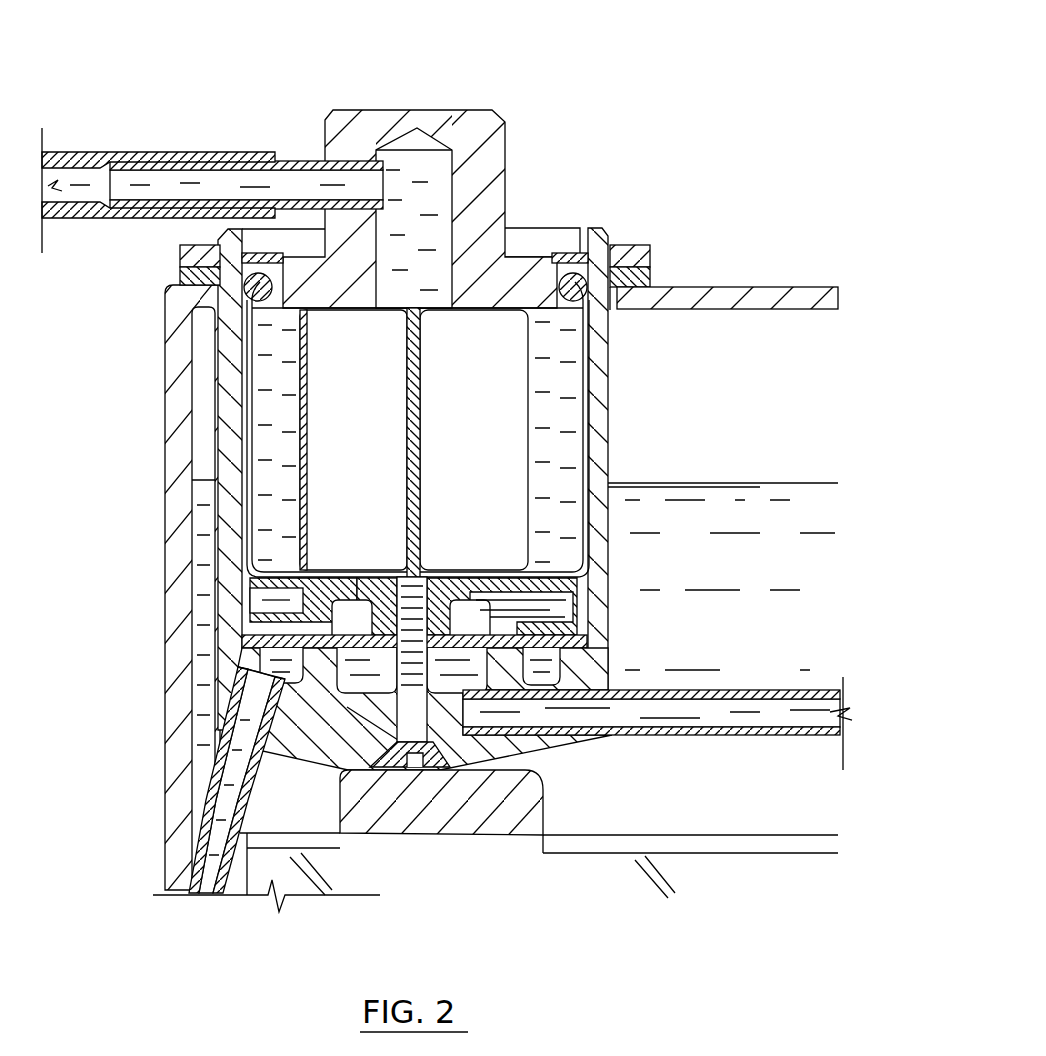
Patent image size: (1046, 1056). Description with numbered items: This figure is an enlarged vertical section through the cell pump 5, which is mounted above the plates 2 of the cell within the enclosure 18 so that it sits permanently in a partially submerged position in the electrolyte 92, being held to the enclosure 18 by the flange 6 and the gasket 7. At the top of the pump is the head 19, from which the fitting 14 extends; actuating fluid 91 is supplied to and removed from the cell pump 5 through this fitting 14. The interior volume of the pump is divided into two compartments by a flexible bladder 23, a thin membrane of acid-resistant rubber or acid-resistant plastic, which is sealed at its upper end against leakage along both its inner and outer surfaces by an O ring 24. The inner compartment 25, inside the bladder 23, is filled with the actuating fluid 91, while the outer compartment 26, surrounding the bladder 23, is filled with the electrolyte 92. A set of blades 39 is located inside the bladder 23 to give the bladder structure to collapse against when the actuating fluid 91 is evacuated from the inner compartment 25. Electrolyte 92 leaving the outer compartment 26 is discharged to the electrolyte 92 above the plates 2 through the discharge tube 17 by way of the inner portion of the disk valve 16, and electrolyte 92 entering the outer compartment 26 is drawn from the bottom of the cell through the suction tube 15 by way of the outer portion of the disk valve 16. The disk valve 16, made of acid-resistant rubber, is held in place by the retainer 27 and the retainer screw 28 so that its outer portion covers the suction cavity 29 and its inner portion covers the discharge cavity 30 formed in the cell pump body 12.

The plates 2 is at (790, 866).
The cell pump 5 is at (597, 181).
The flange 6 is at (627, 257).
The gasket 7 is at (640, 278).
The cell pump body 12 is at (597, 380).
The fitting 14 is at (293, 160).
The suction tube 15 is at (207, 778).
The disk valve 16 is at (603, 637).
The discharge tube 17 is at (738, 720).
The enclosure 18 is at (757, 297).
The head 19 is at (476, 132).
The flexible bladder 23 is at (517, 607).
The O ring 24 is at (580, 263).
The inner compartment 25 is at (553, 445).
The outer compartment 26 is at (573, 613).
The retainer 27 is at (250, 603).
The retainer screw 28 is at (437, 767).
The suction cavity 29 is at (258, 655).
The discharge cavity 30 is at (352, 752).
The blades 39 is at (408, 440).
The actuating fluid 91 is at (153, 180).
The electrolyte 92 is at (807, 563).